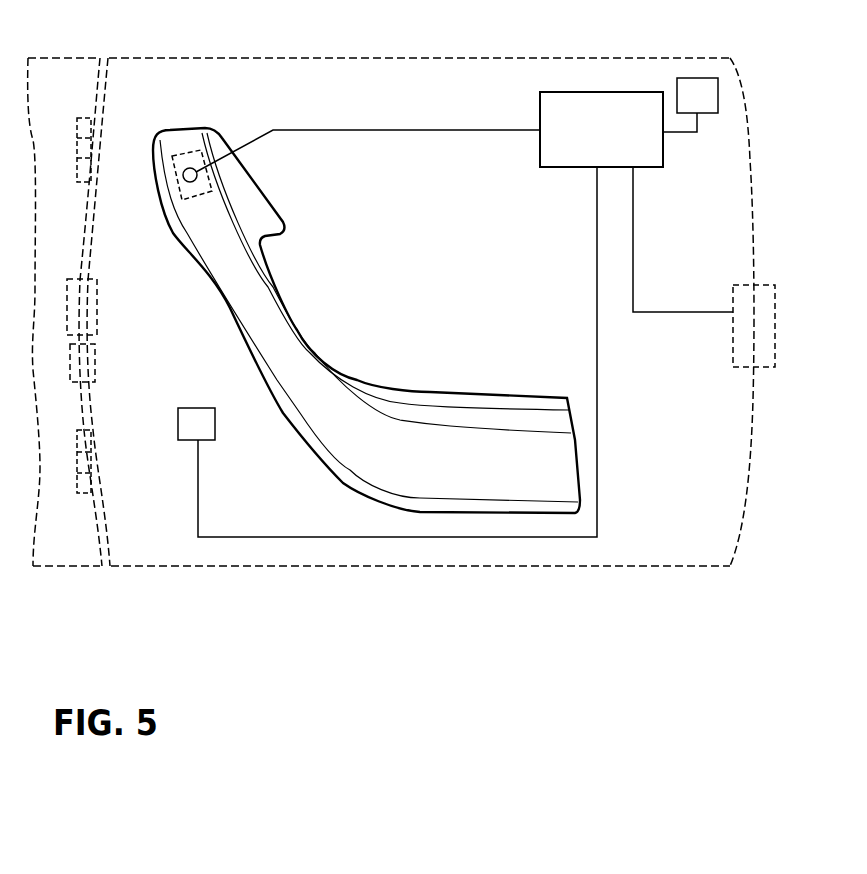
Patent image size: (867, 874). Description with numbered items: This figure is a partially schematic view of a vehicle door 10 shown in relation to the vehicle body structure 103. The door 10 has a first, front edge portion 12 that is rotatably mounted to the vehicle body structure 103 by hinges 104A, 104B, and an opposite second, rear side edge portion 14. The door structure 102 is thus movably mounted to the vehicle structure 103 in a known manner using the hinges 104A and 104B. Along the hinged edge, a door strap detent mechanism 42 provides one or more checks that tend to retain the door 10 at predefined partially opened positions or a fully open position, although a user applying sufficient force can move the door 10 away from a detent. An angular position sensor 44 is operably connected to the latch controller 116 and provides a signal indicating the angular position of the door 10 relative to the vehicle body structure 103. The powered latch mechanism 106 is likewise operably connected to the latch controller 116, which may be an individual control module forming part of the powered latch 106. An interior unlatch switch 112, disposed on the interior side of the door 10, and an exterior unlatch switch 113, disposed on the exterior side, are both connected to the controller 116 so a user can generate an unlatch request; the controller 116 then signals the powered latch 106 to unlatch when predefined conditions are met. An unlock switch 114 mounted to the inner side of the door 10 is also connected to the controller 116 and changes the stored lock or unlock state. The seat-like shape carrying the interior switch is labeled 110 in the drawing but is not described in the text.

The vehicle door 10 is at (442, 57).
The first (front) edge portion 12 is at (88, 257).
The second (rear) side edge portion 14 is at (748, 133).
The door strap detent mechanism 42 is at (93, 313).
The angular position sensor 44 is at (90, 366).
The door structure 102 is at (623, 94).
The vehicle body structure 103 is at (62, 57).
The hinge 104A is at (77, 158).
The hinge 104B is at (78, 463).
The powered latch mechanism 106 is at (777, 297).
The seat 110 is at (285, 412).
The interior unlatch switch 112 is at (190, 168).
The exterior unlatch switch 113 is at (702, 88).
The unlock switch 114 is at (196, 412).
The latch controller 116 is at (616, 137).